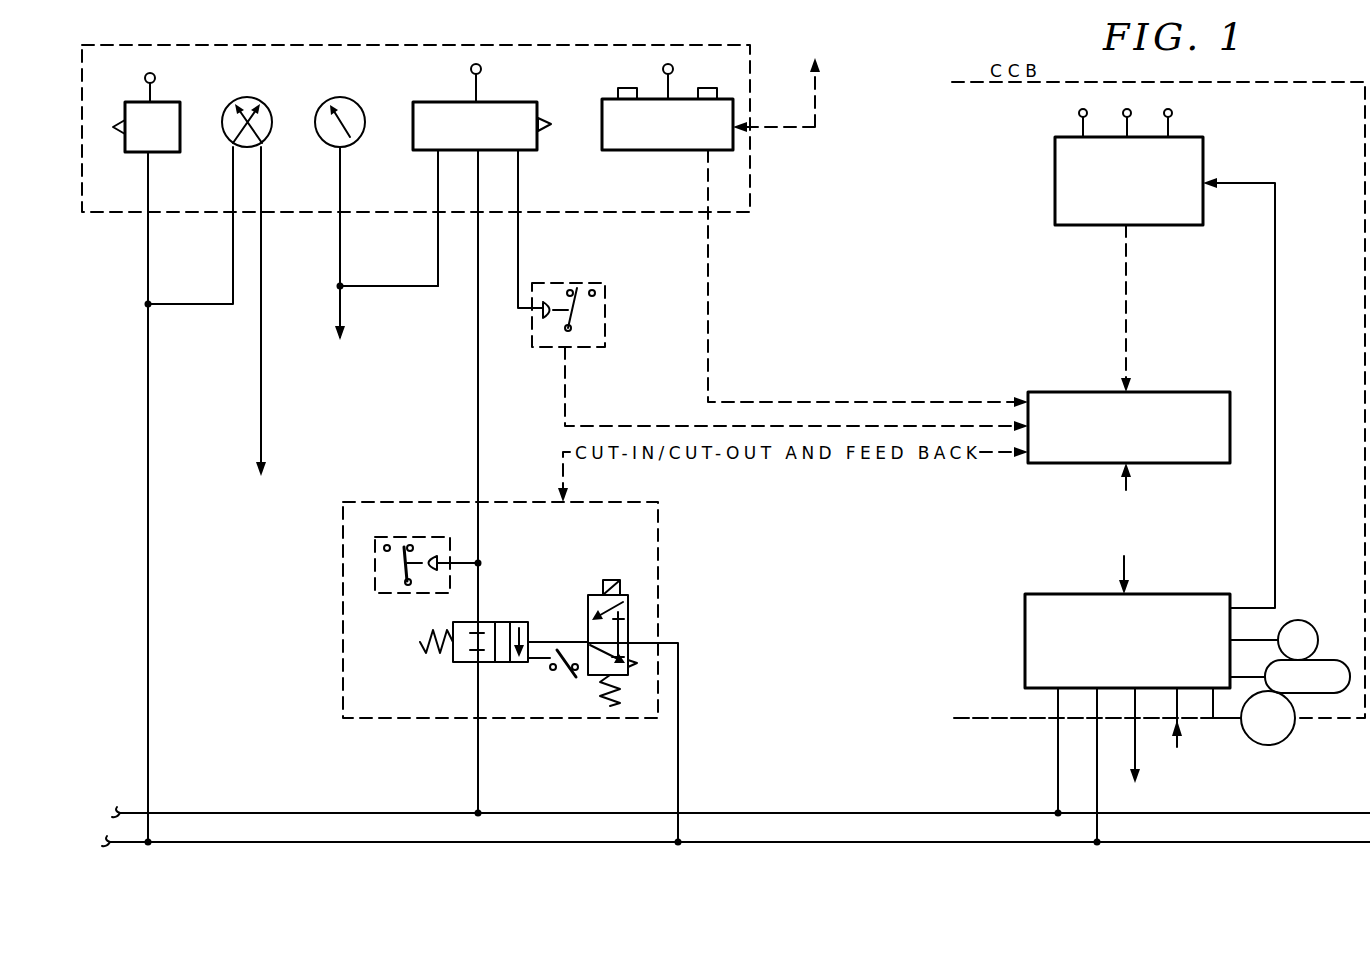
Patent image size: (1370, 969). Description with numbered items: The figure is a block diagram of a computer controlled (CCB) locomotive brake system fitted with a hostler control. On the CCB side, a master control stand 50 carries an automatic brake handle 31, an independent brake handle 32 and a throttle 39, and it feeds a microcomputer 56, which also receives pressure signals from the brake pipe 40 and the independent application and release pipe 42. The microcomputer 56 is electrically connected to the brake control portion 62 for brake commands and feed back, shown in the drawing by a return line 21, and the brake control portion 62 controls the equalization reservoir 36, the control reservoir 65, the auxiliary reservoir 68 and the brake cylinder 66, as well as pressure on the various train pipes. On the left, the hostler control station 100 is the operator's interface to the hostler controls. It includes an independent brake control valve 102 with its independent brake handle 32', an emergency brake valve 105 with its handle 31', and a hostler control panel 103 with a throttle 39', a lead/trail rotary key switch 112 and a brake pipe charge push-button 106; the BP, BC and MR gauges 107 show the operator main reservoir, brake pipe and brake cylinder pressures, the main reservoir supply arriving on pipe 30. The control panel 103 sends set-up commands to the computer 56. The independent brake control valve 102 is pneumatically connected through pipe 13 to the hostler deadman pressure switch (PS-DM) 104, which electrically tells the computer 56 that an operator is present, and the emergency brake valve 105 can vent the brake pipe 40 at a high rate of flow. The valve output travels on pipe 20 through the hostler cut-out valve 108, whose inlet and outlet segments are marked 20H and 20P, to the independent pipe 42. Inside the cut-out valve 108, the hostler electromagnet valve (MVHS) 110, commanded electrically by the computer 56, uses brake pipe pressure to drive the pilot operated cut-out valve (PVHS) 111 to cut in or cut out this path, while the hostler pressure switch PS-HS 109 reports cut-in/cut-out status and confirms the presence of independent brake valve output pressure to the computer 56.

The hostler control station 100 is at (538, 45).
The SA-26 independent brake control valve 102 is at (511, 102).
The hostler control panel 103 is at (647, 150).
The hostler deadman pressure switch (PS-DM) 104 is at (605, 290).
The emergency brake valve 105 is at (135, 157).
The brake pipe charge switch 106 is at (700, 90).
The BP, BC and MR gauges 107 is at (317, 110).
The hostler cut-out valve 108 is at (343, 643).
The hostler pressure switch PS-HS 109 is at (417, 597).
The hostler electromagnet valve (MVHS) 110 is at (590, 608).
The hostler pilot operated cut-out valve (PVHS) 111 is at (465, 663).
The lead/trail switch 112 is at (618, 92).
The pipe 13 is at (518, 229).
The independent application pipe 20 is at (466, 483).
The pipe 20H is at (514, 475).
The pipe 20P is at (503, 733).
The feedback line 21 is at (1239, 394).
The main reservoir pipe 30 is at (423, 218).
The automatic brake handle 31 is at (1056, 118).
The hostler independent brake handle 31' is at (175, 87).
The independent brake handle 32 is at (1140, 113).
The independent brake handle 32' is at (459, 81).
The equalization reservoir 36 is at (1305, 621).
The throttle 39 is at (1193, 118).
The throttle 39' is at (645, 78).
The brake pipe 40 is at (365, 842).
The independent application and release pipe 42 is at (243, 813).
The master control stand 50 is at (1053, 190).
The microcomputer 56 is at (1052, 390).
The brake control portion 62 is at (1025, 612).
The control or 16 reservoir 65 is at (1313, 660).
The brake cylinder 66 is at (1231, 790).
The auxiliary reservoir 68 is at (1295, 728).